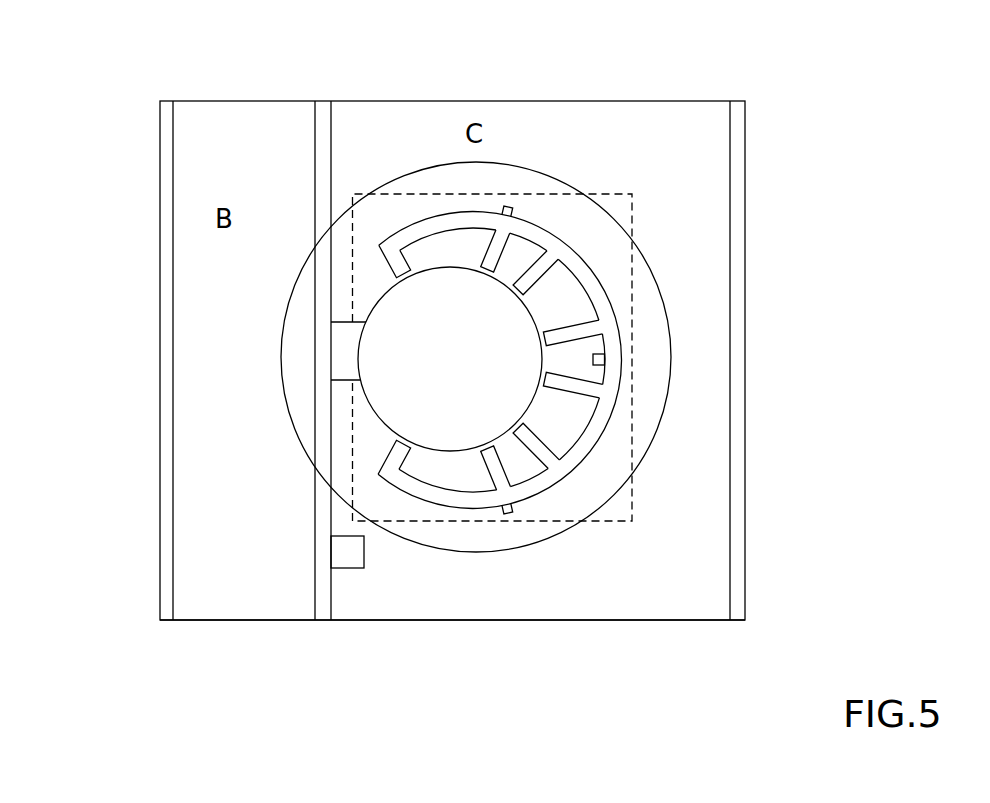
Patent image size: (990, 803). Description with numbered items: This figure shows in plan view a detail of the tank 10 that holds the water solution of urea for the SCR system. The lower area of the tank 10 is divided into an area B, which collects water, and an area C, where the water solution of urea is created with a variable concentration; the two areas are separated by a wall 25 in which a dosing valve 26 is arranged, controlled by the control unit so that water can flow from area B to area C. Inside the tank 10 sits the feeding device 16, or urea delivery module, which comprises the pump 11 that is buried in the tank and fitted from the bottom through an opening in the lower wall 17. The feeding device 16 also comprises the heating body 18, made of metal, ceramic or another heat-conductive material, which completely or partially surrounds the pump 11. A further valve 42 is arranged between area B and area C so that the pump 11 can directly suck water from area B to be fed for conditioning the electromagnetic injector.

The tank 10 is at (767, 93).
The pump 11 is at (522, 330).
The feeding device 16 is at (582, 178).
The lower wall 17 is at (613, 609).
The heating body 18 is at (589, 445).
The wall 25 is at (316, 598).
The dosing valve 26 is at (346, 562).
The further valve 42 is at (314, 353).